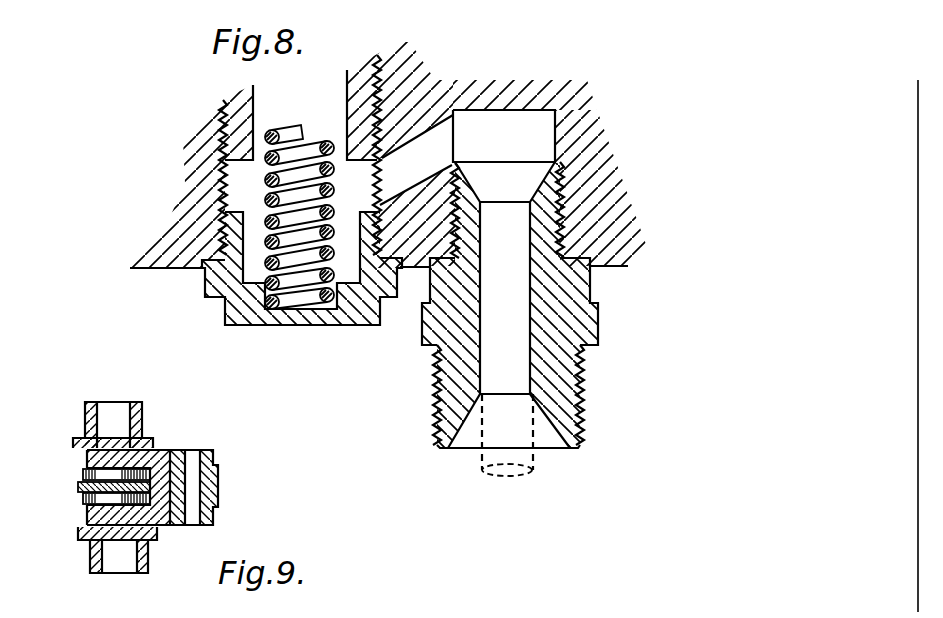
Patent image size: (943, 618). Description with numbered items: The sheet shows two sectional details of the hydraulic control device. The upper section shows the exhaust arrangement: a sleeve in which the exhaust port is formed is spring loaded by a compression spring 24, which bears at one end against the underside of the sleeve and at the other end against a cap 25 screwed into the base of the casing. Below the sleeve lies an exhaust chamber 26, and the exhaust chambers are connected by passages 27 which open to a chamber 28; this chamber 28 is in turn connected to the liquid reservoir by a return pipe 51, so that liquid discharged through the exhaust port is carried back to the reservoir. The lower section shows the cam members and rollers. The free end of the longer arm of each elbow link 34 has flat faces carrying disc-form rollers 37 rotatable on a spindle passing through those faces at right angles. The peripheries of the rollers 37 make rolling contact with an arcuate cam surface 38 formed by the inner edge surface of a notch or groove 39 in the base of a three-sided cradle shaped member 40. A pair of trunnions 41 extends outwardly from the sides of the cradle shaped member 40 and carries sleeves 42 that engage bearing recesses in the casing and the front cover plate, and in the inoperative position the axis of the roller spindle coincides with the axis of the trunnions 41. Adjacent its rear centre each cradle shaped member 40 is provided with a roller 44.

In FIG. 8, the compression spring 24 is at (285, 126).
In FIG. 8, the cap 25 is at (390, 297).
In FIG. 8, the exhaust chamber 26 is at (238, 190).
In FIG. 8, the passage 27 is at (432, 145).
In FIG. 8, the chamber 28 is at (525, 122).
In FIG. 8, the return pipe 51 is at (533, 472).
In FIG. 9, the elbow link 34 is at (80, 486).
In FIG. 9, the rollers 37 is at (82, 496).
In FIG. 9, the arcuate cam surface 38 is at (155, 500).
In FIG. 9, the notch or groove 39 is at (86, 466).
In FIG. 9, the cradle shaped member 40 is at (157, 452).
In FIG. 9, the trunnions 41 is at (118, 410).
In FIG. 9, the sleeves 42 is at (87, 413).
In FIG. 9, the roller 44 is at (217, 474).